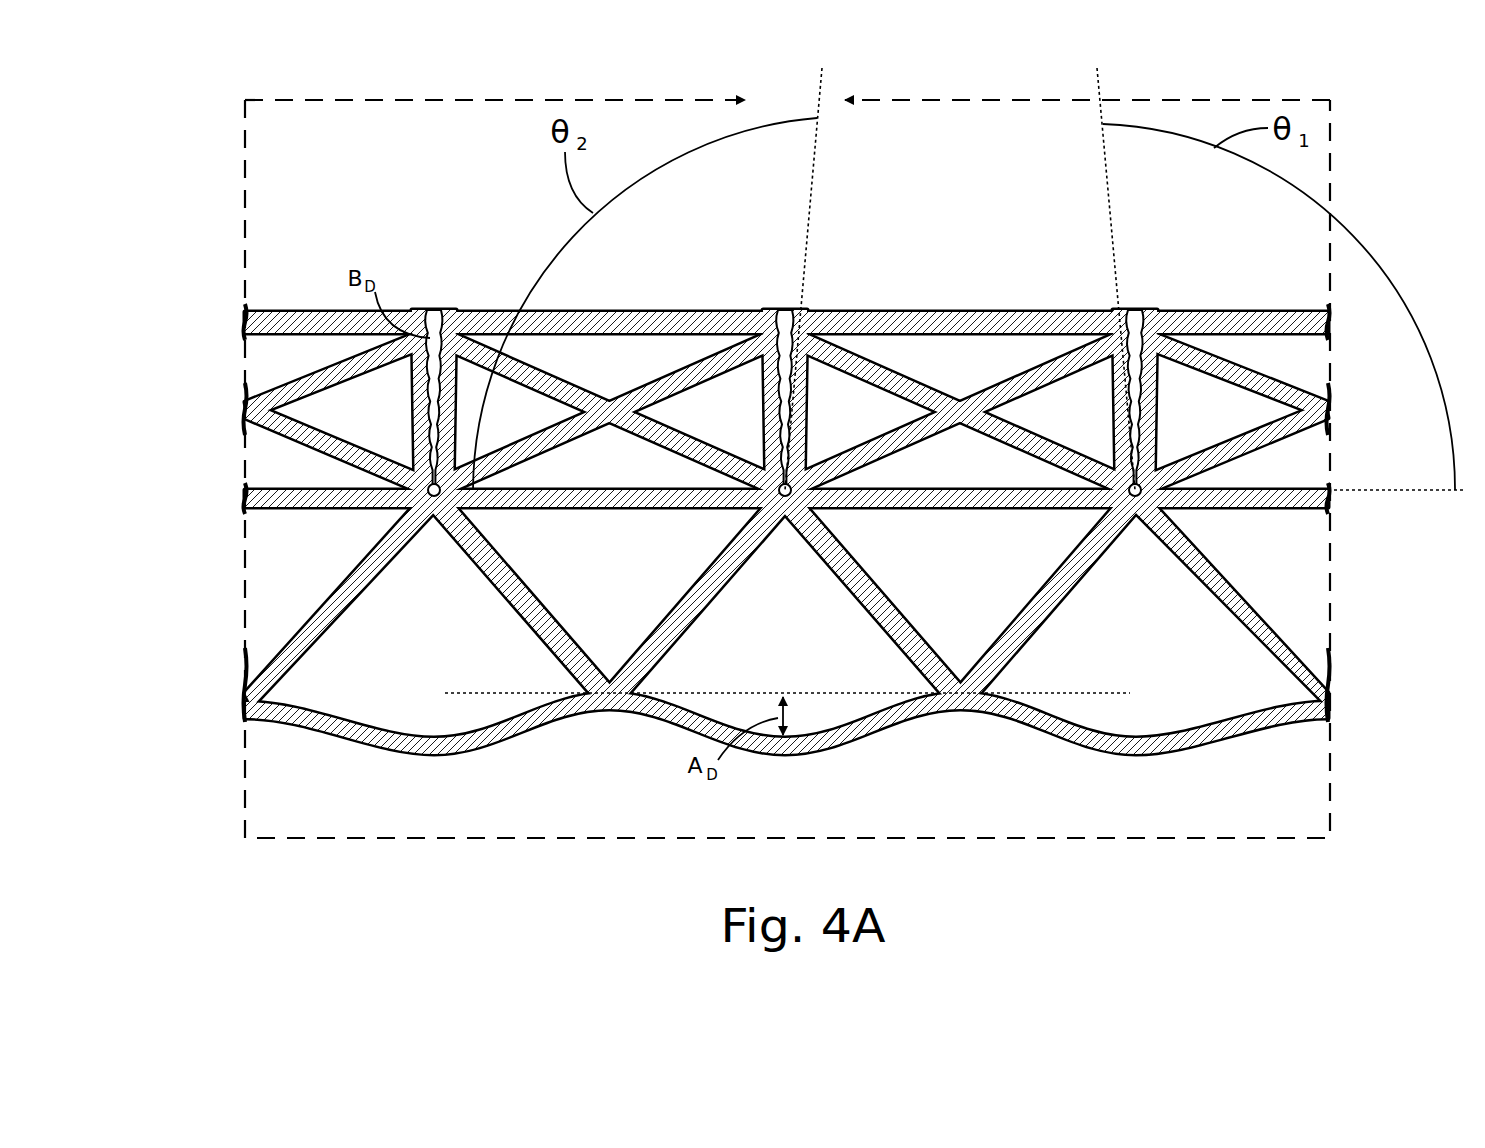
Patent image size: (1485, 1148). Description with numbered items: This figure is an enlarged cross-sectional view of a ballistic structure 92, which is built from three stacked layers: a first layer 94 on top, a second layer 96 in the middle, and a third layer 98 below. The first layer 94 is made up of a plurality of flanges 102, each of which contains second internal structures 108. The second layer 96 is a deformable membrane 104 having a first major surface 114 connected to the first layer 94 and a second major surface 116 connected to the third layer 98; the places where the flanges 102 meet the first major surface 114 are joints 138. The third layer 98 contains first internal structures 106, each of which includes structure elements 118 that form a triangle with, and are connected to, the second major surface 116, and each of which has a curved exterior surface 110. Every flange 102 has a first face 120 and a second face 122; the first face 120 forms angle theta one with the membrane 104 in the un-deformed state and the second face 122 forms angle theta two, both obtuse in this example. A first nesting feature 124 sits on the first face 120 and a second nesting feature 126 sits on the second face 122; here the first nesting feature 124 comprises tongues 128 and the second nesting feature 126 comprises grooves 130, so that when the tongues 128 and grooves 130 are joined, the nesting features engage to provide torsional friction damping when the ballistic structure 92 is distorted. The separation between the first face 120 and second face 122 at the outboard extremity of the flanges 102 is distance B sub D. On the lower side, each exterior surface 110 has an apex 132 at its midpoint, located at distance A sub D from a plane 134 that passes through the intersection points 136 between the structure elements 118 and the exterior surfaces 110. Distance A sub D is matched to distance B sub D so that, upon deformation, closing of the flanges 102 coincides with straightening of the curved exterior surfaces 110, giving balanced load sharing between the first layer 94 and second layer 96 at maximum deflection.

The ballistic structure 92 is at (358, 150).
The first layer 94 is at (217, 310).
The second layer 96 is at (238, 492).
The third layer 98 is at (217, 507).
The flanges 102 is at (905, 311).
The deformable membrane 104 is at (1275, 511).
The first internal structures 106 is at (1270, 612).
The second internal structures 108 is at (905, 372).
The exterior surfaces 110 is at (888, 724).
The first major surface 114 is at (624, 487).
The second major surface 116 is at (624, 510).
The structure elements 118 is at (1060, 598).
The first face 120 is at (771, 306).
The second face 122 is at (797, 306).
The first nesting feature 124 is at (766, 330).
The second nesting feature 126 is at (768, 346).
The tongues 128 is at (427, 306).
The grooves 130 is at (450, 306).
The apex 132 is at (785, 757).
The plane 134 is at (470, 695).
The intersection points 136 is at (600, 710).
The joints 138 is at (403, 511).